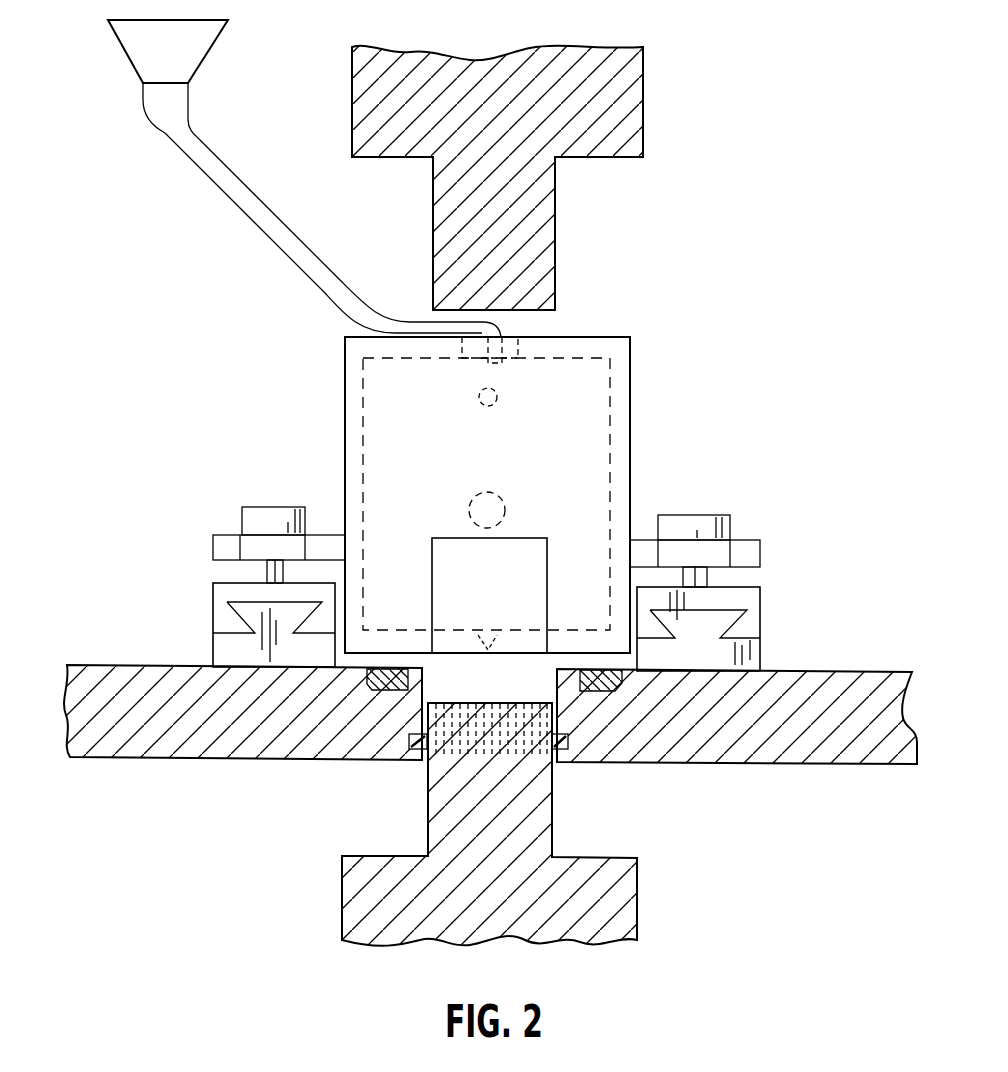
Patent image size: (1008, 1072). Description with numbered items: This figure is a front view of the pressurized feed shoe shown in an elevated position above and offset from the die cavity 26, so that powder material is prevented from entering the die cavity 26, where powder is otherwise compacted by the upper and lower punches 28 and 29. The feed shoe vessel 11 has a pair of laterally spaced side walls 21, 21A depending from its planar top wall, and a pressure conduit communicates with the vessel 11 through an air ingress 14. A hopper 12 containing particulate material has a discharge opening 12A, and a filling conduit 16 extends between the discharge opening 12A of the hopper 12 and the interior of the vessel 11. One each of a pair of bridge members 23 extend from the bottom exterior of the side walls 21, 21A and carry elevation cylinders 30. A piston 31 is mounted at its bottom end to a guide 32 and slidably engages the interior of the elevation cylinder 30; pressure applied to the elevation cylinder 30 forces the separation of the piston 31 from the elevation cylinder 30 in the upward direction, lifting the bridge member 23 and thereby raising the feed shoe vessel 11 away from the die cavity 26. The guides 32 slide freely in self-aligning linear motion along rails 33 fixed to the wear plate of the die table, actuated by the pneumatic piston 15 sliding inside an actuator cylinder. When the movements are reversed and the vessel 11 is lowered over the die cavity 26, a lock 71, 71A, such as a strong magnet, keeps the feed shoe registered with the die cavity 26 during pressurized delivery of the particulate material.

The feed shoe vessel 11 is at (382, 388).
The hopper 12 is at (110, 54).
The discharge opening 12A is at (138, 91).
The air ingress 14 is at (497, 390).
The pneumatic piston 15 is at (496, 500).
The filling conduit 16 is at (243, 208).
The side wall 21 is at (342, 445).
The side wall 21A is at (645, 380).
The bridge member 23 is at (213, 548).
The die cavity 26 is at (450, 682).
The upper punch 28 is at (543, 238).
The lower punch 29 is at (553, 825).
The elevation cylinder 30 is at (242, 512).
The piston 31 is at (263, 570).
The guide 32 is at (760, 605).
The rail 33 is at (760, 655).
The lock 71 is at (363, 697).
The lock 71A is at (614, 699).